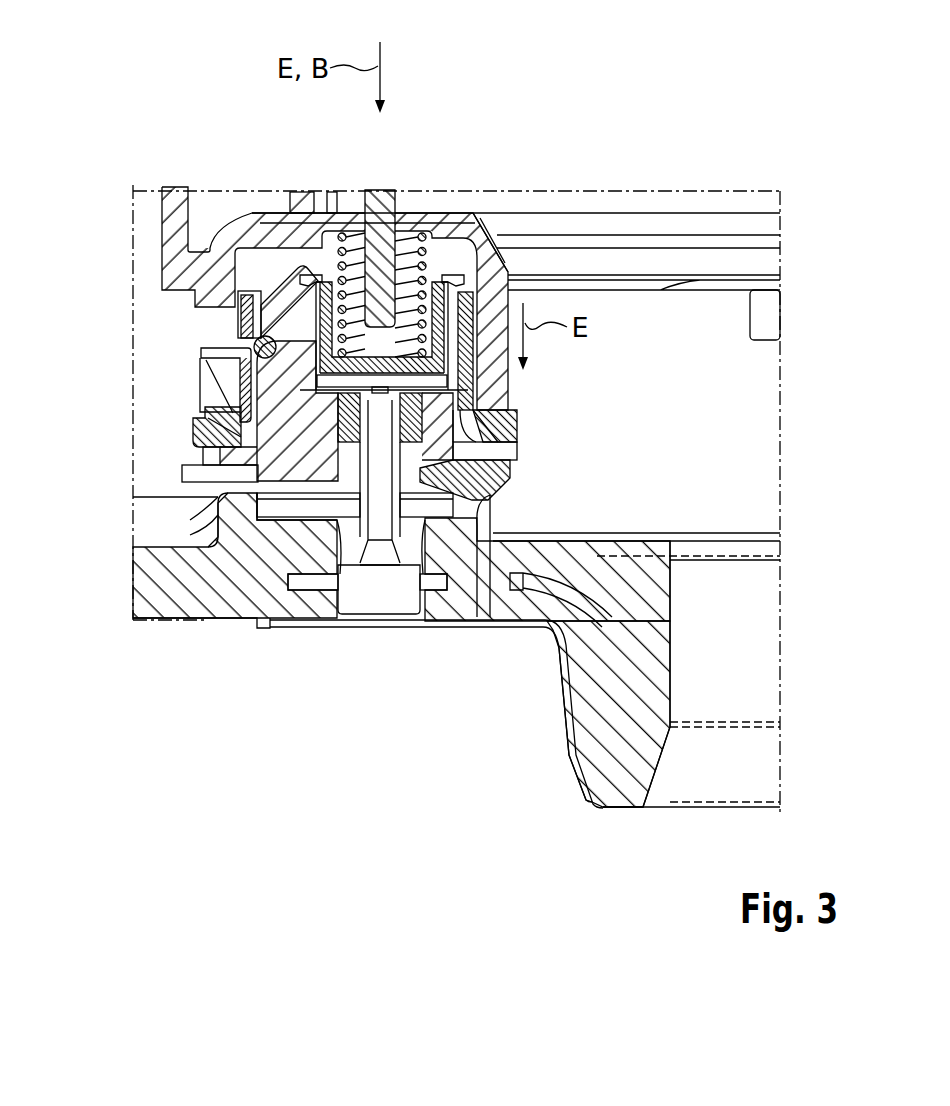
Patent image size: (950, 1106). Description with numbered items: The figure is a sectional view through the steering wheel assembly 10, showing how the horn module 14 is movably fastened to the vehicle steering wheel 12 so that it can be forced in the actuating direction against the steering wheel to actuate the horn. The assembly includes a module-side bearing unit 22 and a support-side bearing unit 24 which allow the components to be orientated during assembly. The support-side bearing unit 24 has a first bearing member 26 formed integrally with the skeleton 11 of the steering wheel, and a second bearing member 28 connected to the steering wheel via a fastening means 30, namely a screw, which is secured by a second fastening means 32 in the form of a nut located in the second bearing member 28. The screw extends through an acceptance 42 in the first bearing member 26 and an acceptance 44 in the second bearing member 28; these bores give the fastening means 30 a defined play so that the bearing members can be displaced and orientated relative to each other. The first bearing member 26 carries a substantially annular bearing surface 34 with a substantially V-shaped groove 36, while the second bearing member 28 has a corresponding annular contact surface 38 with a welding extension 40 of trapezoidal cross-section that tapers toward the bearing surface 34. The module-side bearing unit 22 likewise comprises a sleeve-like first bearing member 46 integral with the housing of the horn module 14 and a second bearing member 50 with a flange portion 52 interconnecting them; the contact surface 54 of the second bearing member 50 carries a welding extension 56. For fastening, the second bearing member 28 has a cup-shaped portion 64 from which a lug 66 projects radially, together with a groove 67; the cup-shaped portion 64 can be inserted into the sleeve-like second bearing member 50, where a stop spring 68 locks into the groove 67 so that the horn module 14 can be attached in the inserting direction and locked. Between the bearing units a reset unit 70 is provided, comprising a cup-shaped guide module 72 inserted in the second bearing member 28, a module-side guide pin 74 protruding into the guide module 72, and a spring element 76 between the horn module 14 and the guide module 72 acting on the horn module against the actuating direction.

The steering wheel assembly 10 is at (145, 83).
The skeleton 11 is at (145, 588).
The vehicle steering wheel 12 is at (205, 597).
The horn module 14 is at (652, 258).
The module-side bearing unit 22 is at (112, 268).
The support-side bearing unit 24 is at (110, 484).
The first bearing member 26 is at (490, 600).
The second bearing member 28 is at (500, 470).
The fastening means 30 is at (382, 550).
The second fastening means 32 is at (328, 593).
The bearing surface 34 is at (225, 546).
The groove 36 is at (267, 592).
The contact surface 38 is at (200, 494).
The welding extension 40 is at (242, 597).
The acceptance 42 is at (352, 530).
The acceptance 44 is at (482, 510).
The first bearing member 46 is at (497, 393).
The second bearing member 50 is at (232, 435).
The flange portion 52 is at (508, 442).
The contact surface 54 is at (513, 415).
The welding extension 56 is at (502, 262).
The cup-shaped portion 64 is at (300, 268).
The lug 66 is at (240, 312).
The groove 67 is at (282, 388).
The stop spring 68 is at (254, 340).
The reset unit 70 is at (456, 218).
The guide module 72 is at (312, 280).
The guide pin 74 is at (380, 248).
The spring element 76 is at (352, 232).